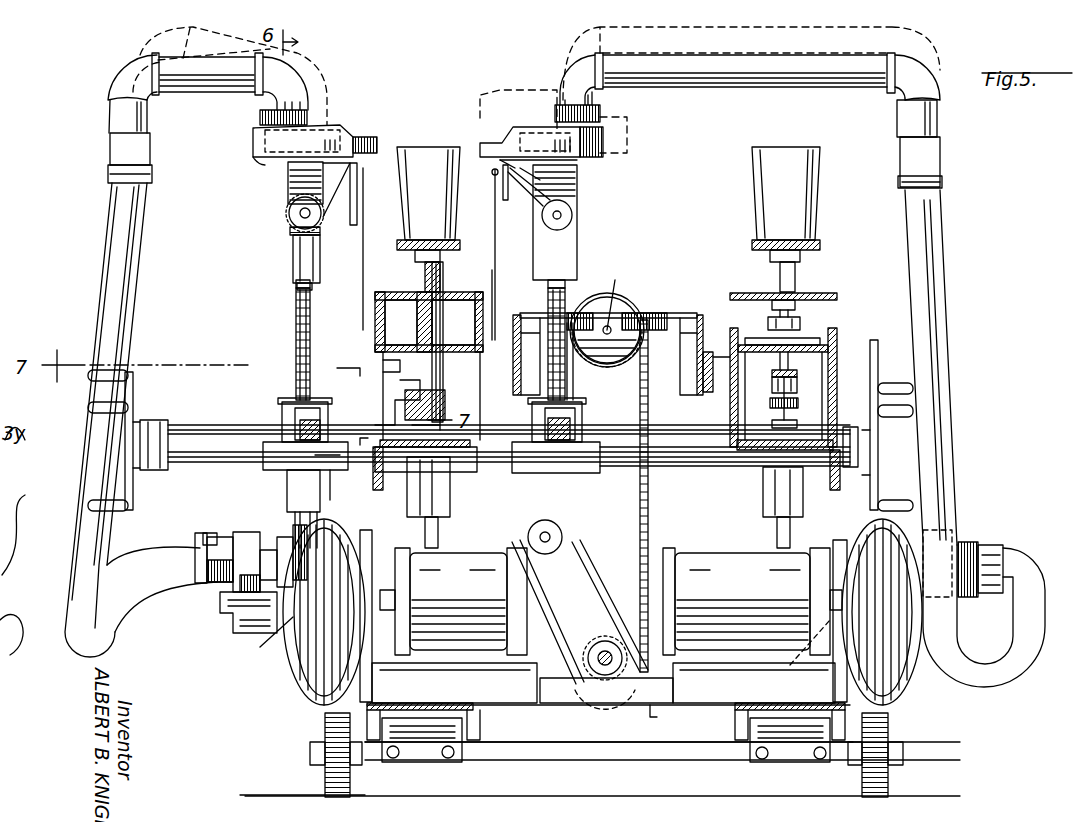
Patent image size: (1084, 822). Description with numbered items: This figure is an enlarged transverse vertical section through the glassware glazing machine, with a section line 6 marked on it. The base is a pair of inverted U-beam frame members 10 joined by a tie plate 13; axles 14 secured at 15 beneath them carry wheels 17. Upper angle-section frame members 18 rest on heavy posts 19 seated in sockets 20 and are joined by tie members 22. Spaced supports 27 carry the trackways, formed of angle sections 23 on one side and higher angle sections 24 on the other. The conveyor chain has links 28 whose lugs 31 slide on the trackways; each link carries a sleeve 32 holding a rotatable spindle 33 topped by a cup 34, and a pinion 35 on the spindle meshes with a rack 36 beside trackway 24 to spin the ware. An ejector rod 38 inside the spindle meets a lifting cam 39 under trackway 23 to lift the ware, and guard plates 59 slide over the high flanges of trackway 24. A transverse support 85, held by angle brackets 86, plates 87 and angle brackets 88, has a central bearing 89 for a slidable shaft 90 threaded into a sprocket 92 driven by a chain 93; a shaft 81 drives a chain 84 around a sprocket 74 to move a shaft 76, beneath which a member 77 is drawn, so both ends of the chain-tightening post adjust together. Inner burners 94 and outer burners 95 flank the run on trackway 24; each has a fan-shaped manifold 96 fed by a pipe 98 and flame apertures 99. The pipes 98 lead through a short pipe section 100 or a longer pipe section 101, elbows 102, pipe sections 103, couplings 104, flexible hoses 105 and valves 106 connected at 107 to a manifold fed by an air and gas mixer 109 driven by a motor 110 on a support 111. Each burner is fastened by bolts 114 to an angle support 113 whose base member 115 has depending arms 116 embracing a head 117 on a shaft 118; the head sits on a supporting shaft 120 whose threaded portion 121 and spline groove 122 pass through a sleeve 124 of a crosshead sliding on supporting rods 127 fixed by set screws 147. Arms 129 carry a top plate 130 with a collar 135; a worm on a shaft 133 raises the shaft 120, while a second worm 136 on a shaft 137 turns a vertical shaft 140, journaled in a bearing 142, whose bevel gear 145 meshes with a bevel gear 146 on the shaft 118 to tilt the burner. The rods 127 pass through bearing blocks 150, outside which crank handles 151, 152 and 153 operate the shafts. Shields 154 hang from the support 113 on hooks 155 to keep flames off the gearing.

The support column 6 is at (291, 494).
The supporting frame members 10 is at (480, 722).
The tie plate 13 is at (641, 719).
The axles 14 is at (571, 750).
The axle securing points 15 is at (412, 758).
The wheels 17 is at (325, 770).
The upper frame members 18 is at (607, 483).
The posts 19 is at (440, 530).
The sockets 20 is at (448, 492).
The tie members 22 is at (703, 480).
The trackway angle sections 23 is at (735, 330).
The trackway angle sections 24 is at (375, 325).
The supports 27 is at (606, 387).
The chain links 28 is at (405, 320).
The horizontal lugs 31 is at (375, 335).
The sleeve portion 32 is at (454, 315).
The spindle 33 is at (450, 270).
The article supporting cup 34 is at (415, 256).
The pinion 35 is at (448, 380).
The rack 36 is at (397, 392).
The ejector rod 38 is at (430, 268).
The lifting cam 39 is at (797, 423).
The guard plate 59 is at (466, 296).
The sprocket 74 is at (598, 636).
The shaft 76 is at (628, 674).
The bracket 77 is at (606, 688).
The horizontal shaft 81 is at (563, 538).
The chain 84 is at (590, 552).
The transverse support 85 is at (690, 313).
The angle brackets 86 is at (545, 340).
The plates 87 is at (513, 400).
The angle brackets 88 is at (513, 382).
The bearing 89 is at (605, 362).
The horizontal shaft 90 is at (610, 291).
The sprocket 92 is at (630, 298).
The chain 93 is at (648, 400).
The inner burners 94 is at (605, 160).
The outer burners 95 is at (246, 154).
The fan shaped manifold 96 is at (272, 157).
The pipe 98 is at (298, 90).
The apertures 99 is at (360, 133).
The short pipe section 100 is at (222, 87).
The pipe sections 101 is at (706, 90).
The elbows 102 is at (118, 70).
The short pipe sections 103 is at (108, 118).
The couplings 104 is at (108, 168).
The flexible hoses 105 is at (115, 226).
The valves 106 is at (245, 532).
The manifold connection 107 is at (560, 604).
The air and gas mixer 109 is at (295, 690).
The motor 110 is at (611, 601).
The support 111 is at (603, 683).
The burner support 113 is at (350, 200).
The bolts 114 is at (300, 170).
The base member 115 is at (262, 180).
The depending arms 116 is at (590, 190).
The head 117 is at (296, 286).
The shaft 118 is at (288, 214).
The supporting shaft 120 is at (296, 340).
The threaded portion 121 is at (551, 370).
The spline groove 122 is at (295, 524).
The sleeve portion 124 is at (290, 478).
The supporting rods 127 is at (235, 455).
The arms 129 is at (282, 408).
The top plate 130 is at (340, 394).
The shaft 133 is at (670, 448).
The collar 135 is at (300, 400).
The second worm 136 is at (300, 432).
The shaft 137 is at (207, 425).
The vertical shaft 140 is at (296, 320).
The bearing 142 is at (293, 268).
The bevel gear 145 is at (290, 232).
The bevel gear 146 is at (292, 200).
The set screws 147 is at (456, 448).
The bearing block 150 is at (160, 420).
The crank handle 151 is at (95, 414).
The crank handle 152 is at (125, 510).
The crank handle 153 is at (125, 372).
The shields 154 is at (363, 270).
The hooks 155 is at (365, 190).